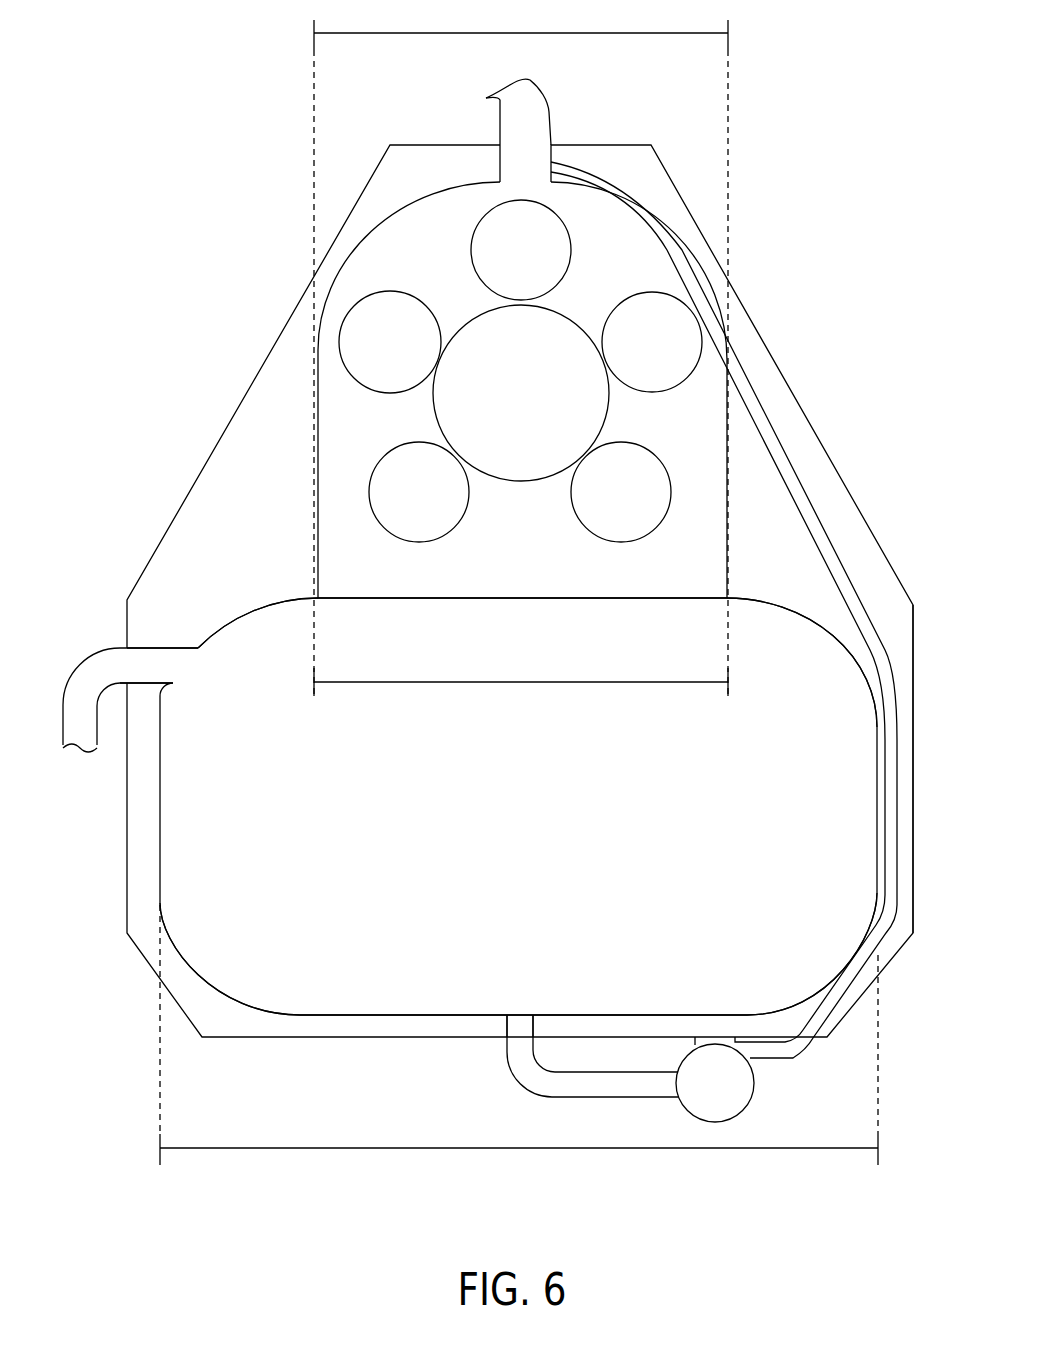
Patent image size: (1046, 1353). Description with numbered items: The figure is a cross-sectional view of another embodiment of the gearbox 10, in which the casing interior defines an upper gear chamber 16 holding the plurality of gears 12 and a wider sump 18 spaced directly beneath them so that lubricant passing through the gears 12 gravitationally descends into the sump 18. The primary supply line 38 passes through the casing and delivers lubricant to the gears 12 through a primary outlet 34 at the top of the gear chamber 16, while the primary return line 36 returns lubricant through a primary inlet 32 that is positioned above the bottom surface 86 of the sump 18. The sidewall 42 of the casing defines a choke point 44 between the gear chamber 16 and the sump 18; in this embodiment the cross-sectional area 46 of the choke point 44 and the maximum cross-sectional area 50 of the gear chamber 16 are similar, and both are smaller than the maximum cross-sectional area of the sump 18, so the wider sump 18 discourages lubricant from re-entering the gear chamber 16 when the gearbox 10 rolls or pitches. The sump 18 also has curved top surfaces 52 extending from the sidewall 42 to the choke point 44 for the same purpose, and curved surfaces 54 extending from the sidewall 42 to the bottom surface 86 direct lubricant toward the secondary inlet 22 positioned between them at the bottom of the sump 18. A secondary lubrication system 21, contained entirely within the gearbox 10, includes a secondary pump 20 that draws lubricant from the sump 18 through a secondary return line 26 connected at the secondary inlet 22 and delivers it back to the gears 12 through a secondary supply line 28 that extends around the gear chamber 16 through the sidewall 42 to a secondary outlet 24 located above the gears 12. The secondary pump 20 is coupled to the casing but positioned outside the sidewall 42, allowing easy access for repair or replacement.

The gearbox 10 is at (160, 108).
The gears 12 is at (509, 264).
The gear chamber 16 is at (345, 444).
The sump 18 is at (479, 876).
The secondary pump 20 is at (738, 1087).
The secondary lubrication system 21 is at (888, 620).
The secondary inlet 22 is at (516, 1038).
The secondary outlet 24 is at (565, 152).
The secondary return line 26 is at (623, 1098).
The secondary supply line 28 is at (768, 413).
The primary inlet 32 is at (171, 651).
The primary outlet 34 is at (520, 160).
The primary return line 36 is at (85, 683).
The primary supply line 38 is at (540, 117).
The sidewall 42 is at (233, 450).
The choke point 44 is at (488, 631).
The cross-sectional area 46 is at (519, 930).
The maximum cross-sectional area 50 is at (521, 348).
The curved top surfaces 52 is at (215, 633).
The curved surfaces 54 is at (207, 975).
The bottom surface 86 is at (322, 1017).